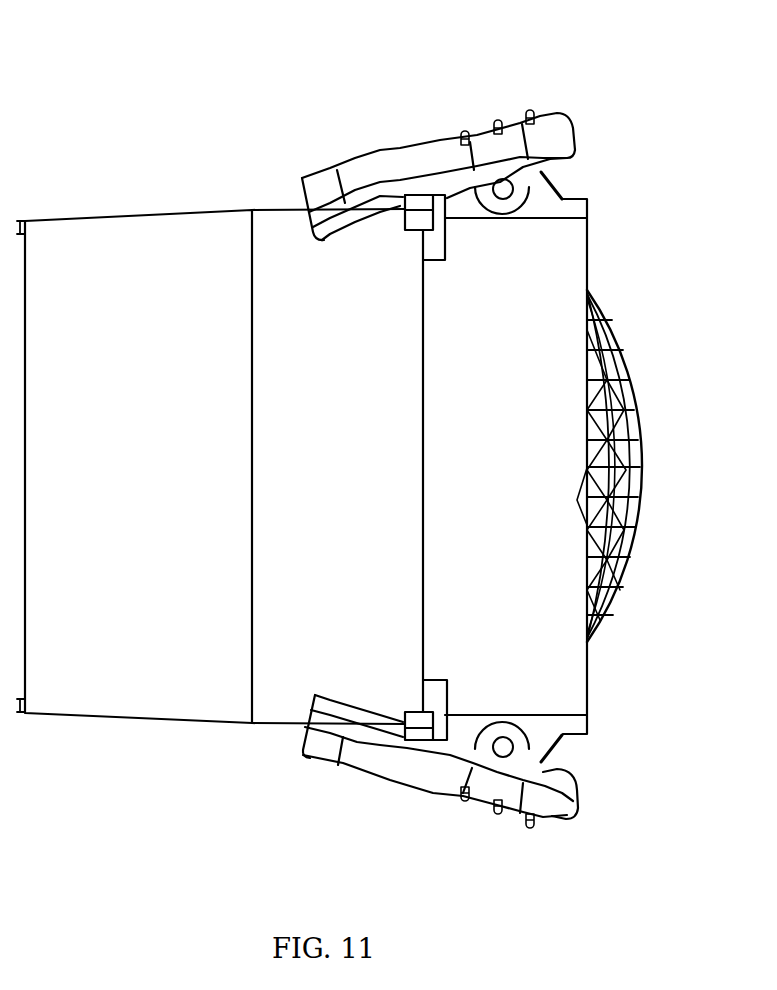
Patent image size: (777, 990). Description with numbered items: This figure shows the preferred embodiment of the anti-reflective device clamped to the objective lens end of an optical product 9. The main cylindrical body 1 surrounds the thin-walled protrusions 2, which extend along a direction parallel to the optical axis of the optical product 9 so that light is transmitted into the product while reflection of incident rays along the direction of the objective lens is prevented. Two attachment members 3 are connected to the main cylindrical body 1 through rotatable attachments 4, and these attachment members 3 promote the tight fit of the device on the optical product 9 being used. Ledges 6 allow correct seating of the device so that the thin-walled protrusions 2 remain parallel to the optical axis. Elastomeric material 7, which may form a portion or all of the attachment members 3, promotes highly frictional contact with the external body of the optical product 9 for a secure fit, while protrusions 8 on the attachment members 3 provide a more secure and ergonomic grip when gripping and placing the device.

The main cylindrical body 1 is at (573, 246).
The thin-walled protrusions 2 is at (638, 463).
The attachment members 3 is at (405, 148).
The rotatable attachment 4 is at (541, 172).
The ledges 6 is at (433, 700).
The elastomeric material 7 is at (335, 231).
The protrusions 8 is at (465, 800).
The optical product 9 is at (77, 682).